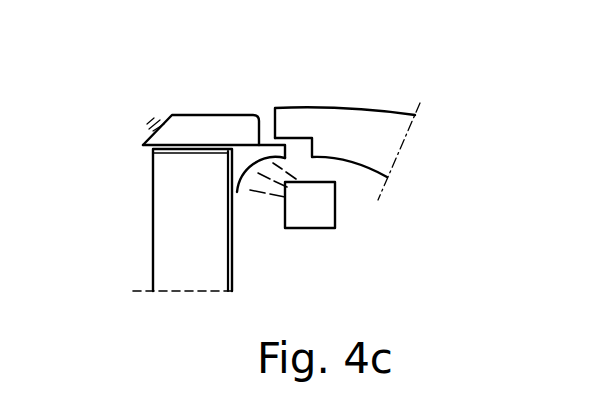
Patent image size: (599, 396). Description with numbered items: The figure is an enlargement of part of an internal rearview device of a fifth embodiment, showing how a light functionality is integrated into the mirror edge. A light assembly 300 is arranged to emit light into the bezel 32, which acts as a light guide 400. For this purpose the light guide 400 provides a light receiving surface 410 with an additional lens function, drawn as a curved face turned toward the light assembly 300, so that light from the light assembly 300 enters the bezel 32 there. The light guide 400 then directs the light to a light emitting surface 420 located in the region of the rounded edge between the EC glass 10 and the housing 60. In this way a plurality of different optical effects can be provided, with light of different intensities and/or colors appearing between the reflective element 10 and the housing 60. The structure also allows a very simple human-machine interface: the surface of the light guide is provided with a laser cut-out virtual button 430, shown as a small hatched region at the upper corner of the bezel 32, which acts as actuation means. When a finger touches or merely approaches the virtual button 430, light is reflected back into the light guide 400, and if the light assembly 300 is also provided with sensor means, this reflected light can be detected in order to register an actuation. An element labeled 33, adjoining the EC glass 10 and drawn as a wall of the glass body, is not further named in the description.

The EC glass 10 is at (176, 247).
The wall of the base body 33 is at (228, 171).
The light emitting surface 420 is at (171, 94).
The virtual button 430 is at (158, 117).
The bezel 32 is at (232, 91).
The light guide 400 is at (223, 130).
The light receiving surface 410 is at (237, 192).
The housing 60 is at (380, 130).
The light assembly 300 is at (303, 228).